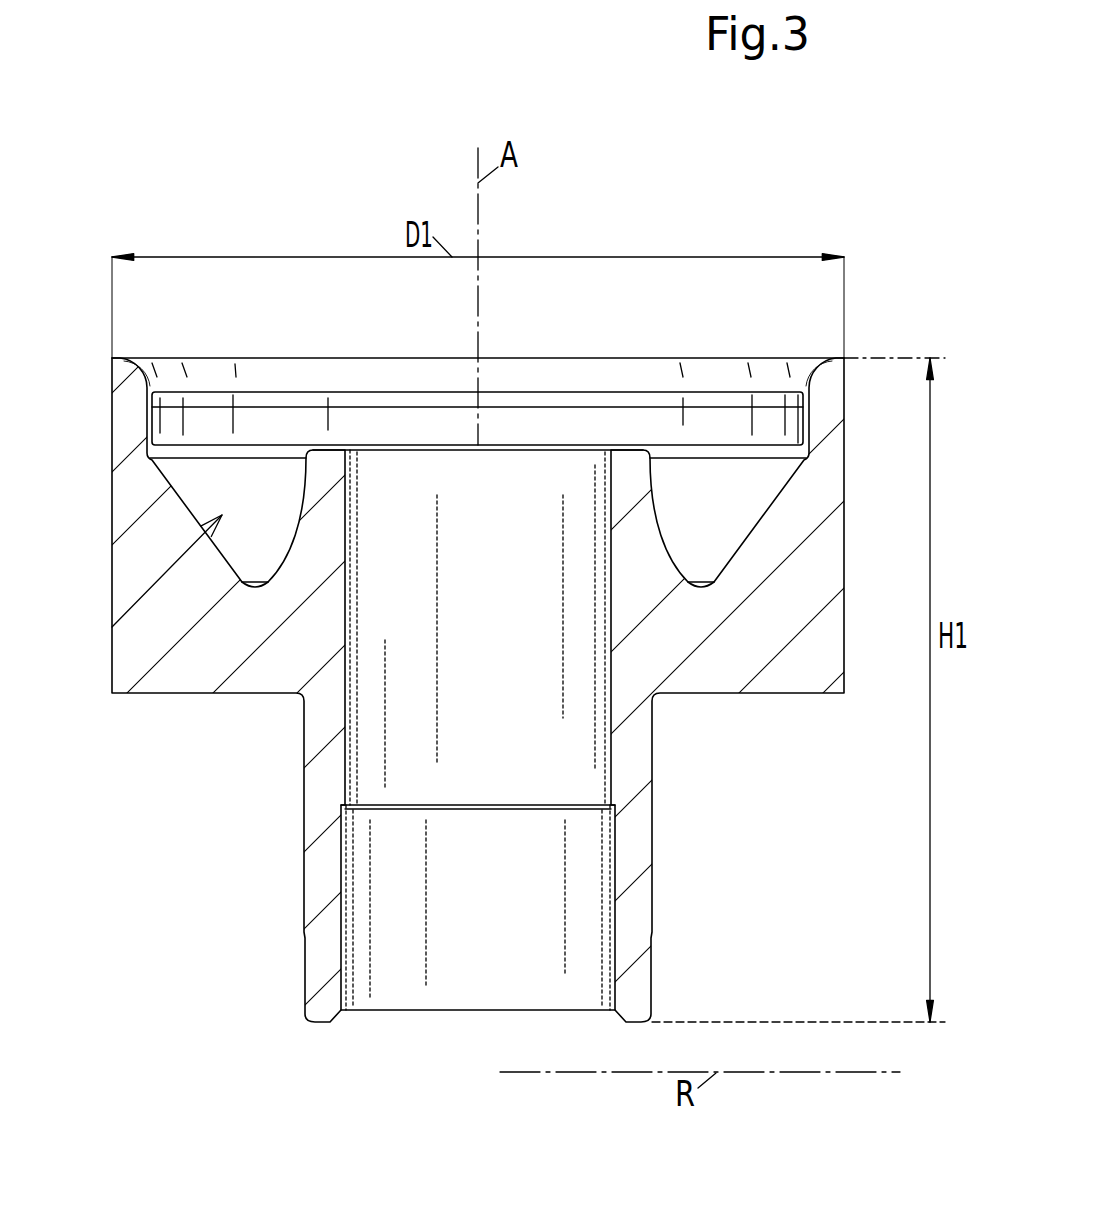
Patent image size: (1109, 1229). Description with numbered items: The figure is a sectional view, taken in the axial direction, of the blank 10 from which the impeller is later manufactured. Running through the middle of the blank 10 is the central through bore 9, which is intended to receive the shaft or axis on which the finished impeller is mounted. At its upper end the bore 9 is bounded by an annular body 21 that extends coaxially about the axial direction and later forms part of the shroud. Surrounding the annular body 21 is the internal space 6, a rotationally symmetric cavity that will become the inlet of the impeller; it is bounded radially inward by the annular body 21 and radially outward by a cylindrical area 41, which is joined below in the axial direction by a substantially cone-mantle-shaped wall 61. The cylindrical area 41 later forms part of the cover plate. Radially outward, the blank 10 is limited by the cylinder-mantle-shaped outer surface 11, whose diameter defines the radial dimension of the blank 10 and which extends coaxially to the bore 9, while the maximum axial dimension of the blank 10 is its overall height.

The blank 10 is at (628, 200).
The outer surface 11 is at (112, 557).
The cylindrical area 41 is at (126, 415).
The internal space 6 is at (372, 422).
The annular body 21 is at (323, 467).
The cone-mantle-shaped wall 61 is at (205, 535).
The central through bore 9 is at (448, 980).